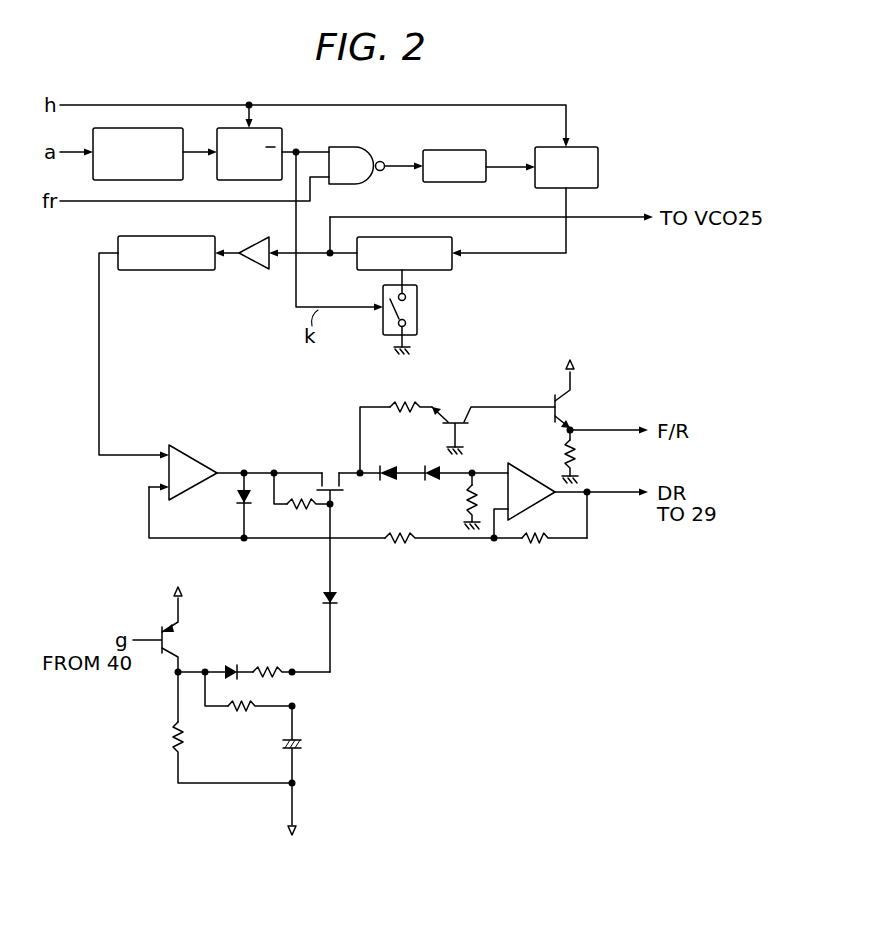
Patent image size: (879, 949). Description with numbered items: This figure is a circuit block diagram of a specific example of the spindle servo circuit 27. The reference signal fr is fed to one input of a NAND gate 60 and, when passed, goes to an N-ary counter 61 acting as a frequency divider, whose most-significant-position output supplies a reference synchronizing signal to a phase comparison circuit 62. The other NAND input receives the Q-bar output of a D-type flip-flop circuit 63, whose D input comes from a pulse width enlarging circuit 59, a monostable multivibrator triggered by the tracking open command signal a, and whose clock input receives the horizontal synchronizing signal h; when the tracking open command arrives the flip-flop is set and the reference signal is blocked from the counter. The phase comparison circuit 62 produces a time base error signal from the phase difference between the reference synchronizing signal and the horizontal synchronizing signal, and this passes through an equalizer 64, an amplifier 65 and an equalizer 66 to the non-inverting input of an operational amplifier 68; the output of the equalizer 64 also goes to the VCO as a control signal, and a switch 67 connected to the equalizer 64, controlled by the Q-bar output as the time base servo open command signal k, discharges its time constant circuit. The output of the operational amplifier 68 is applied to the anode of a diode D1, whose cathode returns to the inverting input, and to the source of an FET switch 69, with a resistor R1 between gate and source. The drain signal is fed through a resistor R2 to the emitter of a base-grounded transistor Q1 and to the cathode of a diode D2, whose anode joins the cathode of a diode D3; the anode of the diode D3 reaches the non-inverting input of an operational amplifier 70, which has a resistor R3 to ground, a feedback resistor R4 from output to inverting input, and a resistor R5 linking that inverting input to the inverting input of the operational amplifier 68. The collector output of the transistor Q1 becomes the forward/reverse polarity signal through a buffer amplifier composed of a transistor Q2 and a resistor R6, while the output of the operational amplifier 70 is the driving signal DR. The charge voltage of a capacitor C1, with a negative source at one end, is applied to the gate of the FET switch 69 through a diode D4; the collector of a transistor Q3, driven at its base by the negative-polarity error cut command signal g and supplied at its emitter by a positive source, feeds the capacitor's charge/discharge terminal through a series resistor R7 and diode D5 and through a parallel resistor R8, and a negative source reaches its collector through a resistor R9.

The pulse width enlarging circuit 59 is at (158, 180).
The D-type flip-flop circuit 63 is at (250, 180).
The NAND gate 60 is at (340, 184).
The N-ary counter 61 is at (453, 182).
The phase comparison circuit 62 is at (582, 188).
The equalizer 64 is at (440, 270).
The amplifier 65 is at (257, 269).
The equalizer 66 is at (195, 270).
The switch 67 is at (417, 323).
The operational amplifier 68 is at (197, 458).
The FET switch 69 is at (326, 468).
The operational amplifier 70 is at (530, 505).
The spindle servo circuit 27 is at (468, 684).
The resistor R1 is at (300, 509).
The resistor R2 is at (390, 402).
The resistor R3 is at (466, 500).
The feedback resistor R4 is at (542, 545).
The resistor R5 is at (405, 545).
The resistor R6 is at (578, 452).
The resistor R7 is at (270, 665).
The resistor R8 is at (235, 711).
The resistor R9 is at (172, 738).
The diode D1 is at (238, 497).
The diode D2 is at (385, 480).
The diode D3 is at (430, 480).
The diode D4 is at (340, 598).
The diode D5 is at (233, 663).
The base-grounded transistor Q1 is at (452, 415).
The transistor Q2 is at (566, 410).
The transistor Q3 is at (180, 637).
The capacitor C1 is at (302, 742).